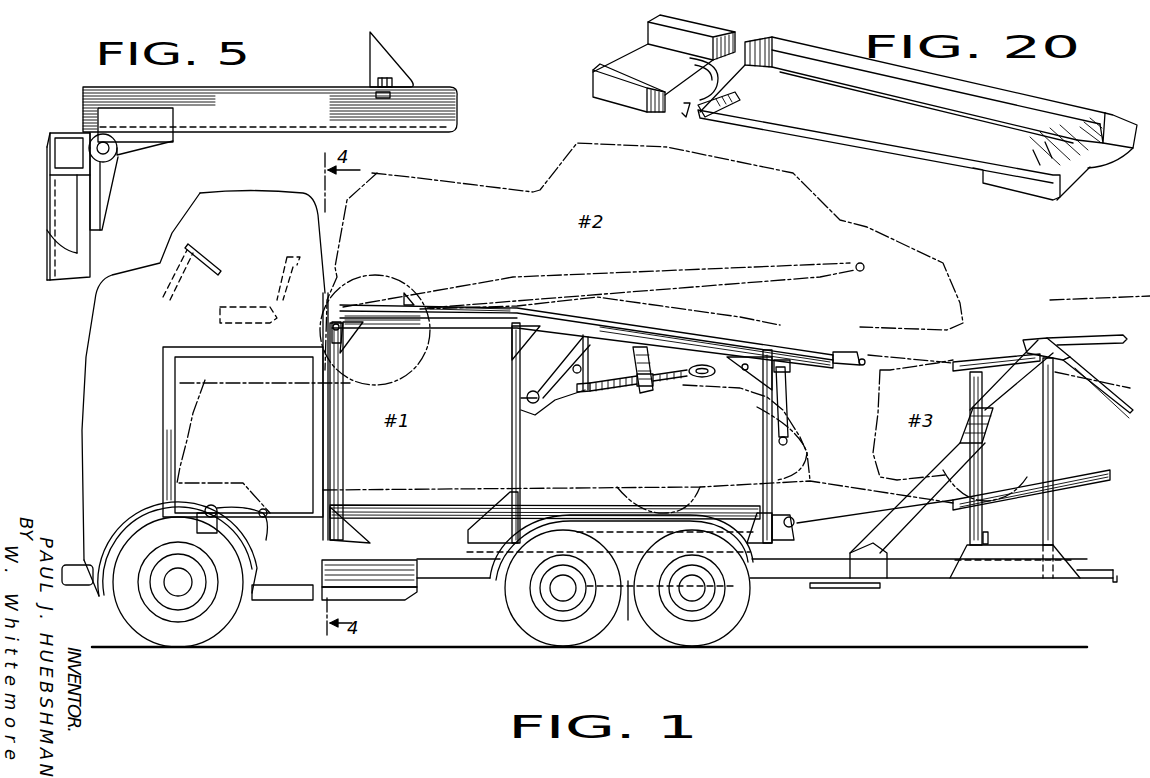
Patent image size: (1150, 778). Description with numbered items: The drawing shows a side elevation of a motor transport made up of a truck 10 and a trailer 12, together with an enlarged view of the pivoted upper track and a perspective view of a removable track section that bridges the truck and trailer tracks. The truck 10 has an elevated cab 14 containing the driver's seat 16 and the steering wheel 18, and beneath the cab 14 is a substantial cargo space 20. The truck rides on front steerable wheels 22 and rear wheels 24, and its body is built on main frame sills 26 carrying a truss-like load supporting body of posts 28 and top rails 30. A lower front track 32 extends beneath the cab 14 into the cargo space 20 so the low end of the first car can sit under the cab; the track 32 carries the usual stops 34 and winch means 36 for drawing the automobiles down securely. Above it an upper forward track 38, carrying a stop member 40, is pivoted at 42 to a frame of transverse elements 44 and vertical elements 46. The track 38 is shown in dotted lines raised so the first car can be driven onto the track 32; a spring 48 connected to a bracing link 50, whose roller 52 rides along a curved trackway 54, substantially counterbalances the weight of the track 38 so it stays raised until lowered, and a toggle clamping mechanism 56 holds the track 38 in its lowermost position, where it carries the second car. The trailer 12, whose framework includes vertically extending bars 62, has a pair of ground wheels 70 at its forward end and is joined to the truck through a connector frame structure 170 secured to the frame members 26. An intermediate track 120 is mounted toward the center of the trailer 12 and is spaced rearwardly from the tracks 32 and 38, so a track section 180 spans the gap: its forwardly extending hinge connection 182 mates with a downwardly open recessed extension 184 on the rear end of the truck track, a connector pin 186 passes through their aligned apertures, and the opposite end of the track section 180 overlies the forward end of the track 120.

In FIG. 1, the truck 10 is at (492, 587).
In FIG. 1, the trailer 12 is at (1043, 587).
In FIG. 1, the elevated cab 14 is at (272, 193).
In FIG. 1, the driver's seat 16 is at (292, 262).
In FIG. 1, the steering wheel 18 is at (212, 268).
In FIG. 1, the cargo space 20 is at (180, 383).
In FIG. 1, the front steerable wheels 22 is at (233, 606).
In FIG. 1, the rear wheels 24 is at (511, 607).
In FIG. 1, the main frame sills 26 is at (442, 577).
In FIG. 1, the posts 28 is at (521, 463).
In FIG. 1, the top rails 30 is at (498, 325).
In FIG. 1, the lower front track 32 is at (433, 518).
In FIG. 1, the stops 34 is at (267, 522).
In FIG. 1, the winch means 36 is at (794, 530).
In FIG. 5, the upper forward track 38 is at (428, 120).
In FIG. 20, the upper forward track 38 is at (637, 60).
In FIG. 1, the upper forward track 38 is at (705, 347).
In FIG. 5, the stop member 40 is at (405, 68).
In FIG. 5, the pivot 42 is at (113, 157).
In FIG. 5, the transverse elements 44 is at (68, 133).
In FIG. 5, the vertical elements 46 is at (83, 260).
In FIG. 1, the spring 48 is at (640, 393).
In FIG. 1, the bracing link 50 is at (567, 362).
In FIG. 1, the roller 52 is at (527, 397).
In FIG. 1, the curved trackway 54 is at (589, 360).
In FIG. 1, the toggle clamping mechanism 56 is at (787, 398).
In FIG. 1, the vertically extending bars 62 is at (1053, 437).
In FIG. 1, the ground wheels 70 is at (745, 613).
In FIG. 20, the intermediate track 120 is at (1112, 160).
In FIG. 1, the intermediate track 120 is at (1093, 370).
In FIG. 1, the connector frame structure 170 is at (630, 613).
In FIG. 20, the track section 180 is at (900, 123).
In FIG. 1, the track section 180 is at (972, 333).
In FIG. 20, the hinge connection 182 is at (708, 114).
In FIG. 20, the recessed extension 184 is at (713, 72).
In FIG. 20, the connector pin 186 is at (684, 112).